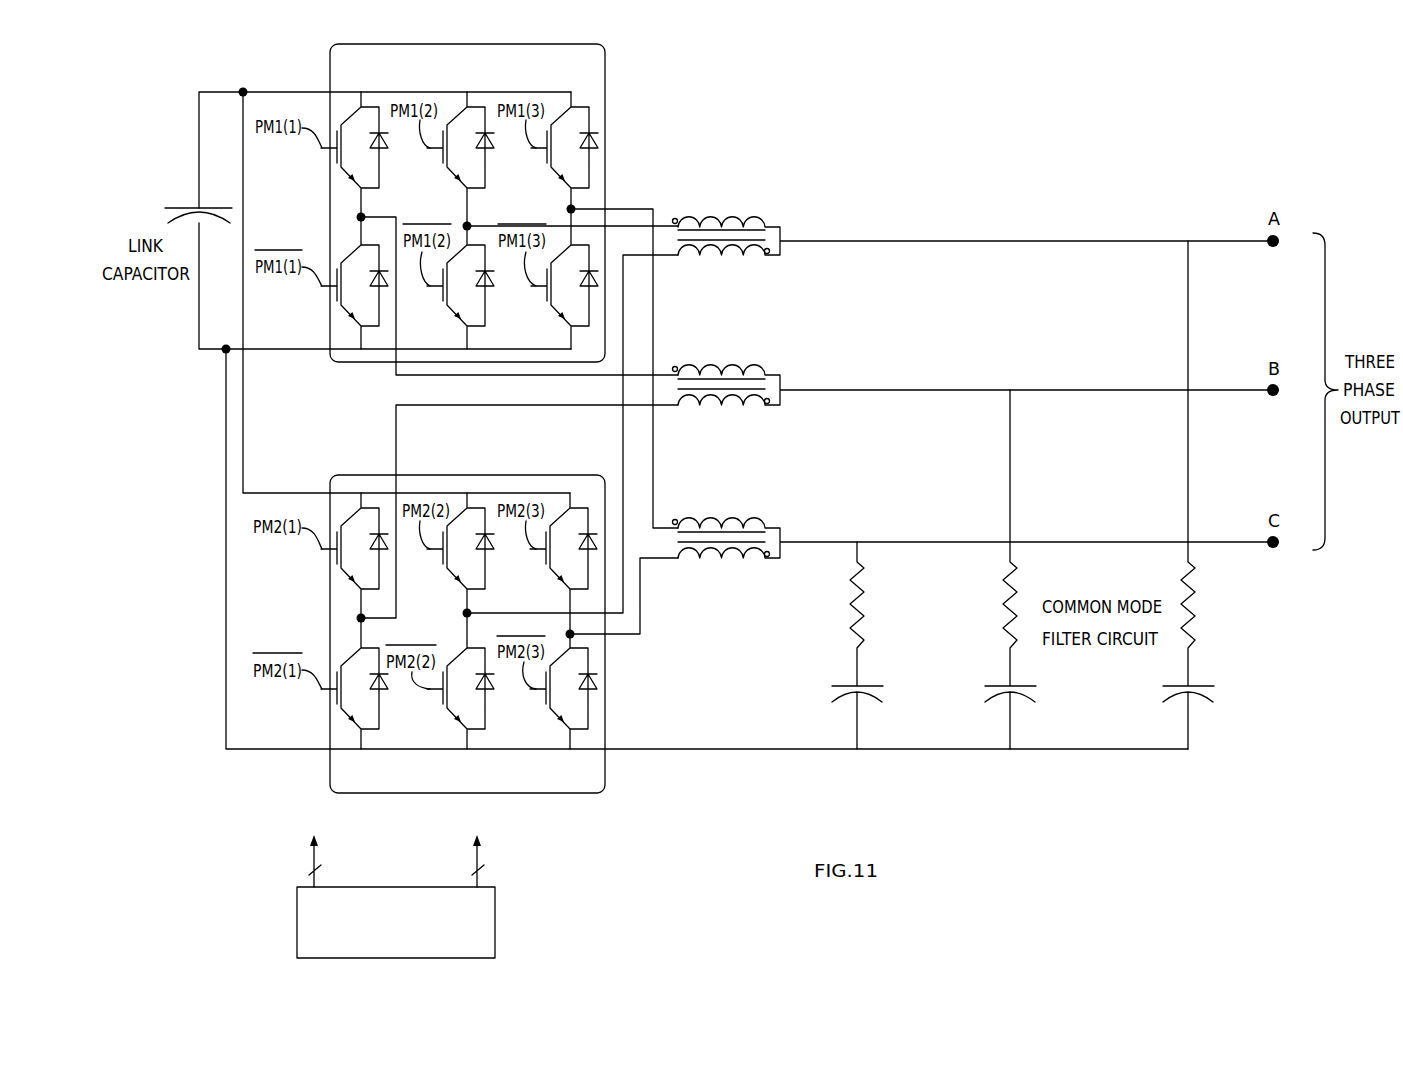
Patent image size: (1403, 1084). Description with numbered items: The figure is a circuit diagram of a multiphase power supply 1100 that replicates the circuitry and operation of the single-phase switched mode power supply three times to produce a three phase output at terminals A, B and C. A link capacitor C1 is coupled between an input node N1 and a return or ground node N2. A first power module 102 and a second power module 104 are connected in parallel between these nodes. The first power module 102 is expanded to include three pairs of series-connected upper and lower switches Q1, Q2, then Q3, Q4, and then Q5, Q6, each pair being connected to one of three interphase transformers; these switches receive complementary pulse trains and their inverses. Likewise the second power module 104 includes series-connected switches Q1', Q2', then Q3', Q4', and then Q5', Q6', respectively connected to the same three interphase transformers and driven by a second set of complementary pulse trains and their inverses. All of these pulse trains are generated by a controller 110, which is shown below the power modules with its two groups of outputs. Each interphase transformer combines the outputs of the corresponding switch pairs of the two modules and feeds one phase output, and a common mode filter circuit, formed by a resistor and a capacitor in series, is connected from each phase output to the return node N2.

The multiphase power supply 1100 is at (1003, 141).
The first power module 102 is at (640, 131).
The second power module 104 is at (640, 690).
The controller 110 is at (495, 928).
The link capacitor C1 is at (198, 202).
The input node N1 is at (243, 88).
The return or ground node N2 is at (224, 352).
The upper switch Q1 is at (354, 154).
The lower switch Q2 is at (354, 283).
The upper switch Q3 is at (460, 159).
The lower switch Q4 is at (460, 287).
The upper switch Q5 is at (564, 150).
The lower switch Q6 is at (564, 279).
The upper switch Q1' is at (354, 555).
The lower switch Q2' is at (354, 683).
The upper switch Q3' is at (460, 553).
The lower switch Q4' is at (460, 681).
The upper switch Q5' is at (563, 563).
The lower switch Q6' is at (563, 691).